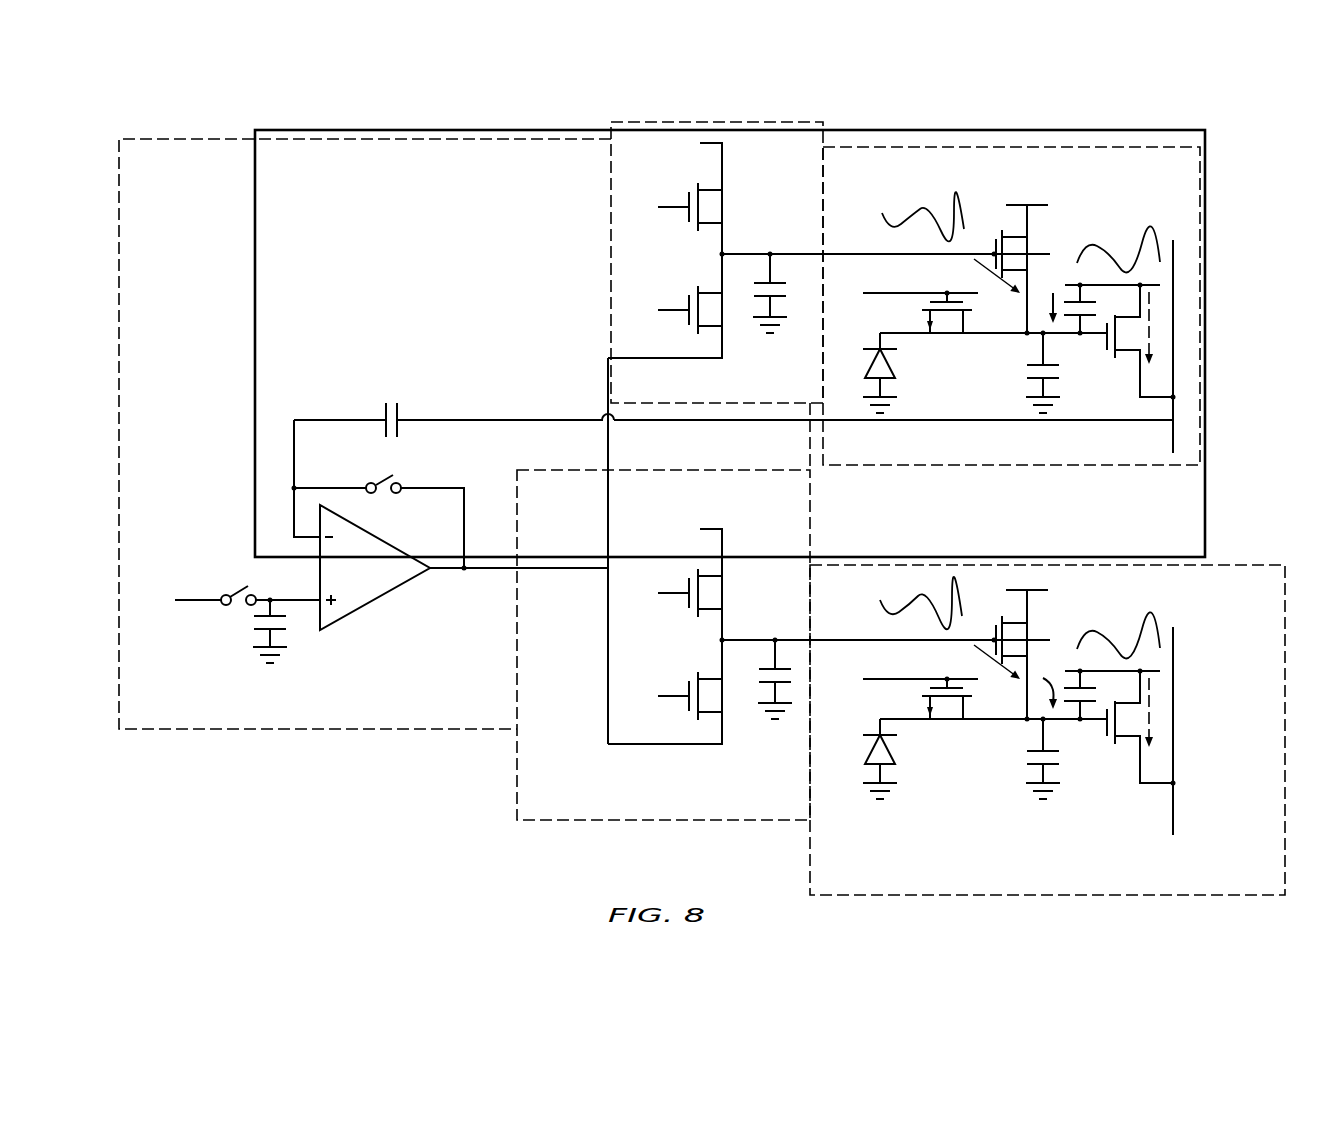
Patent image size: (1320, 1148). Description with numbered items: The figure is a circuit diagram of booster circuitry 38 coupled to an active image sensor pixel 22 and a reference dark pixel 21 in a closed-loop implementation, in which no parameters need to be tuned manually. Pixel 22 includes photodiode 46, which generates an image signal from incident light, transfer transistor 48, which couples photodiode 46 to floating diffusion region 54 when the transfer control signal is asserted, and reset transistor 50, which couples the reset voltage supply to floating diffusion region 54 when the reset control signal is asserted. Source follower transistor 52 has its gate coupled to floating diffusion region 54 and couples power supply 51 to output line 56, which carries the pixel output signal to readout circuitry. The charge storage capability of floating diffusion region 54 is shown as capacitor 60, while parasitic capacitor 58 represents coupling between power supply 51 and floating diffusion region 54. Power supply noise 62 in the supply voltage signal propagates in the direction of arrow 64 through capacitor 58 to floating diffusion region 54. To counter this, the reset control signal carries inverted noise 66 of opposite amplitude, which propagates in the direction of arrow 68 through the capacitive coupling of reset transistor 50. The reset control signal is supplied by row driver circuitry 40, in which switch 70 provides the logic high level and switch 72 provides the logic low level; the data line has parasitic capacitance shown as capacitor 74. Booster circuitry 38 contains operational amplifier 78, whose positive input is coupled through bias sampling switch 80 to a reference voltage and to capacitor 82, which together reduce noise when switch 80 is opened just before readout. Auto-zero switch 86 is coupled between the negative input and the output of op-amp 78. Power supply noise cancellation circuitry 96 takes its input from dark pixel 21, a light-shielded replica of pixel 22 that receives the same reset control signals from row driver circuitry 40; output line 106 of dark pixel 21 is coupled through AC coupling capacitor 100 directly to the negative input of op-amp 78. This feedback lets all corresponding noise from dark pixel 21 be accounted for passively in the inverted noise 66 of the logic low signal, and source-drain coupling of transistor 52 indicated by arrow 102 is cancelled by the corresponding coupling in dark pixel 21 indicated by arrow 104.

The dark pixel 21 is at (952, 272).
The image sensor pixel 22 is at (810, 845).
The booster circuitry 38 is at (190, 730).
The row driver circuitry 40 is at (611, 188).
The photodiode 46 is at (873, 750).
The transfer transistor 48 is at (950, 700).
The reset transistor 50 is at (1010, 636).
The power supply 51 is at (1140, 670).
The source follower transistor 52 is at (1125, 708).
The floating diffusion region 54 is at (1027, 721).
The output line 56 is at (1175, 632).
The parasitic capacitor 58 is at (1088, 704).
The capacitor 60 is at (1040, 764).
The power supply noise 62 is at (1130, 628).
The arrow 64 is at (1045, 683).
The inverted noise 66 is at (915, 597).
The arrow 68 is at (985, 659).
The switch 70 is at (703, 589).
The switch 72 is at (700, 697).
The capacitor 74 is at (783, 668).
The operational amplifier 78 is at (365, 606).
The bias sampling switch 80 is at (226, 606).
The capacitor 82 is at (283, 630).
The auto-zero switch 86 is at (393, 477).
The power supply noise cancellation circuitry 96 is at (255, 160).
The AC coupling capacitor 100 is at (400, 413).
The arrow 102 is at (1150, 697).
The arrow 104 is at (1152, 327).
The output line 106 is at (1175, 266).